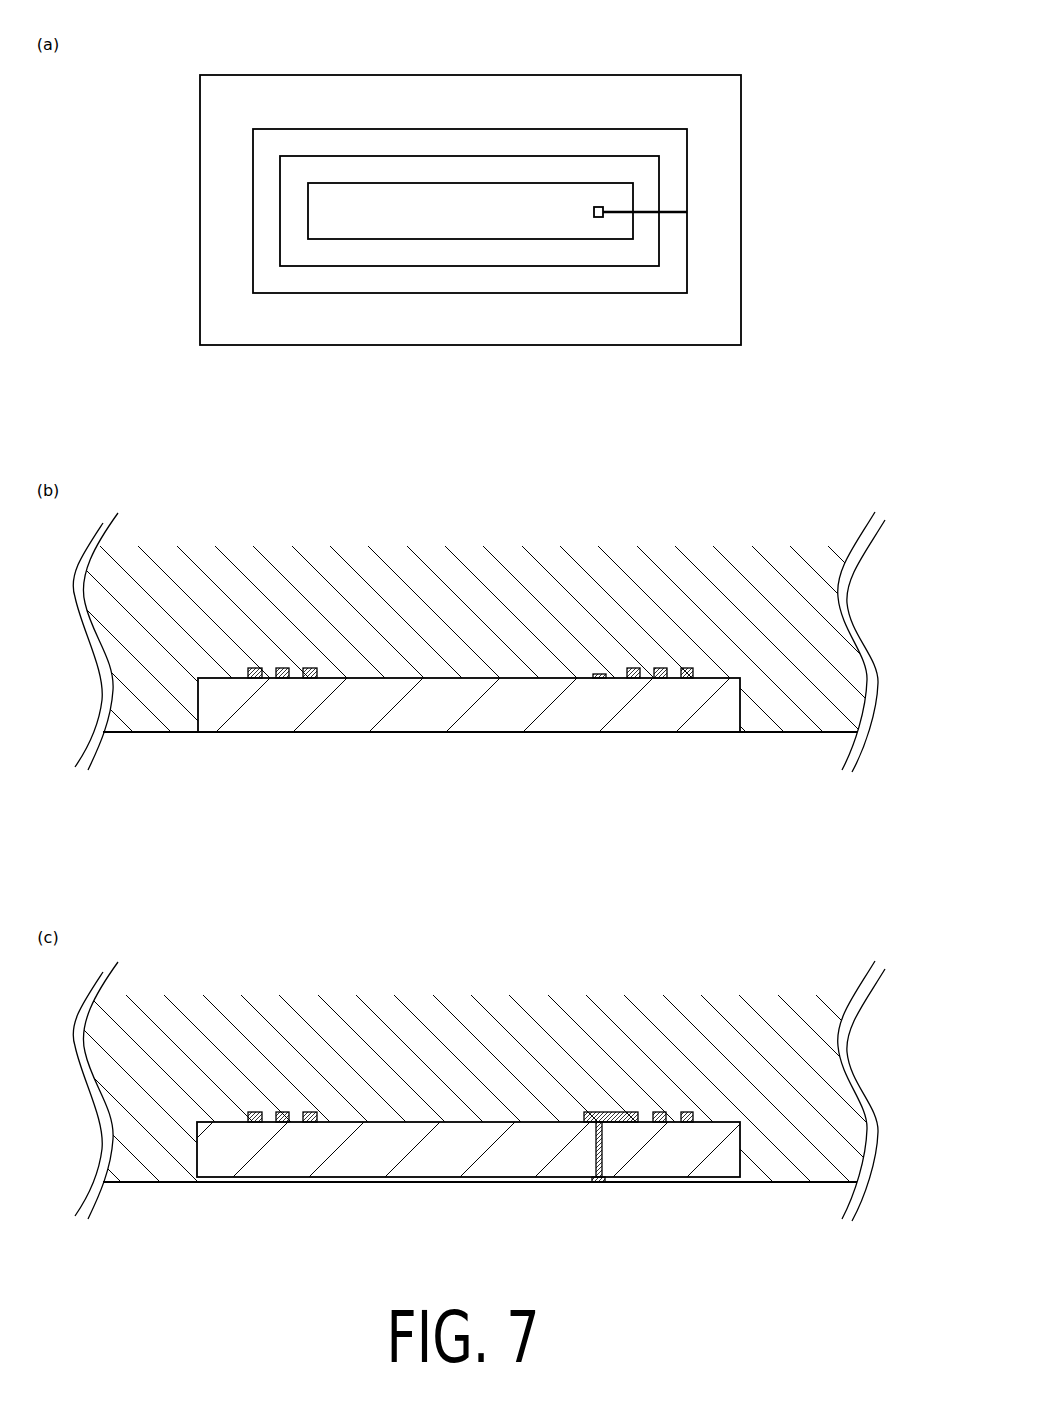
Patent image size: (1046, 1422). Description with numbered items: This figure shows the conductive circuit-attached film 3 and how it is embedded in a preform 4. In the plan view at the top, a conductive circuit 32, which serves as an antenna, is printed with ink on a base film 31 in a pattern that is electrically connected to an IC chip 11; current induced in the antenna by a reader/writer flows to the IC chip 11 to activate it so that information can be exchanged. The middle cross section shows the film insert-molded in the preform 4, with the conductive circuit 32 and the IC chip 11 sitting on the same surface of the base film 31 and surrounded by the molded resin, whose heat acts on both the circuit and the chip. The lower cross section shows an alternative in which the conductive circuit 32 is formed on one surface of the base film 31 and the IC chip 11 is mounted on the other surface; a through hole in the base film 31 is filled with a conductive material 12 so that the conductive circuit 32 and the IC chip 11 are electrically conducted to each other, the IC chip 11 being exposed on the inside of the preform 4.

The conductive circuit-attached film 3 is at (279, 42).
The preform 4 is at (672, 560).
The IC chip 11 is at (602, 206).
The conductive material 12 is at (607, 1153).
The base film 31 is at (732, 175).
The conductive circuit 32 is at (517, 127).